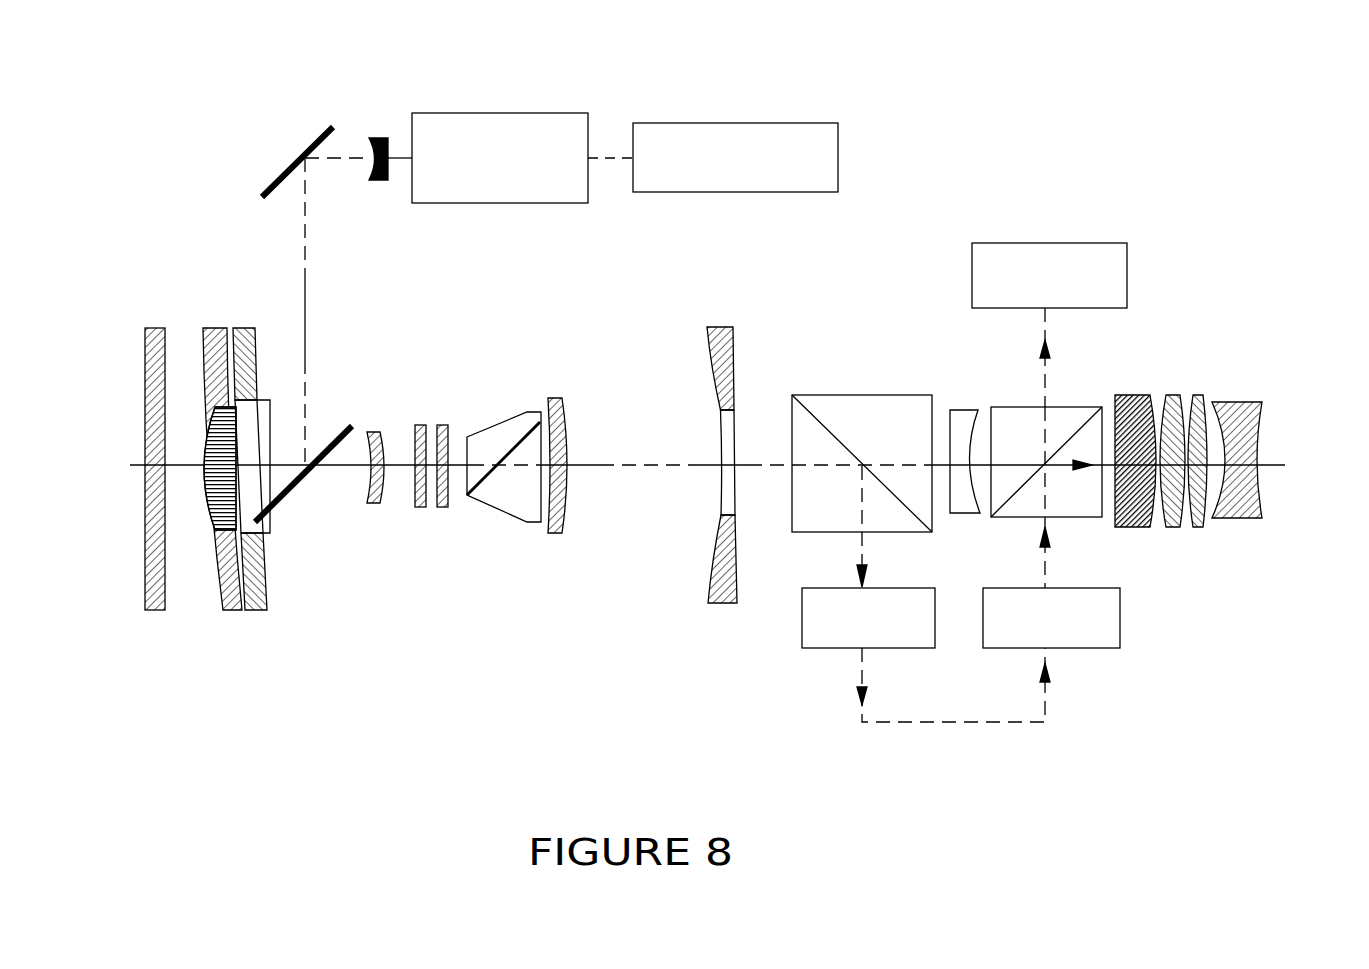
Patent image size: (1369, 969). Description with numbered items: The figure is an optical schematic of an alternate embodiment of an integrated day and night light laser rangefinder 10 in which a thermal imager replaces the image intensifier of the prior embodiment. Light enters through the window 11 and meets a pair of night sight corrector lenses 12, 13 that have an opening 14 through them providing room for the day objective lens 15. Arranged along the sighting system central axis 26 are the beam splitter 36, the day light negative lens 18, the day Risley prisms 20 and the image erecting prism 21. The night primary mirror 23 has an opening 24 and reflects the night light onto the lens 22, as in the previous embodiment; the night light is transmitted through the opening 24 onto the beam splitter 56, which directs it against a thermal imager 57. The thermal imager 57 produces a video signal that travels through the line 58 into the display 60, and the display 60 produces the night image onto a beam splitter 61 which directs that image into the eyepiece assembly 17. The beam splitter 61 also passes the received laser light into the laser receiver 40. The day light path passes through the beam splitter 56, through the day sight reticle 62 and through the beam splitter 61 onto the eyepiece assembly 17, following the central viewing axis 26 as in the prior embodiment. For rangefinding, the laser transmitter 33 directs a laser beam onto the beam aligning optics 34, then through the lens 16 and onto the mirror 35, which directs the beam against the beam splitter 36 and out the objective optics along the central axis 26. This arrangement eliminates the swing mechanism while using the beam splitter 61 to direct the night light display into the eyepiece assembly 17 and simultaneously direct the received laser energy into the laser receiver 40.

The integrated day and night light laser rangefinder 10 is at (152, 181).
The window 11 is at (145, 372).
The night sight corrector lens 12 is at (225, 610).
The night sight corrector lens 13 is at (270, 613).
The opening 14 is at (260, 433).
The day objective lens 15 is at (207, 410).
The lens 16 is at (380, 140).
The eyepiece assembly 17 is at (1212, 395).
The day light negative lens 18 is at (377, 430).
The day Risley prisms 20 is at (440, 508).
The image erecting prism 21 is at (502, 508).
The lens 22 is at (555, 535).
The night primary mirror 23 is at (733, 330).
The opening 24 is at (728, 447).
The central axis 26 is at (130, 465).
The laser transmitter 33 is at (728, 122).
The beam aligning optics 34 is at (525, 112).
The mirror 35 is at (290, 162).
The beam splitter 36 is at (352, 428).
The laser receiver 40 is at (1127, 248).
The beam splitter 56 is at (878, 395).
The thermal imager 57 is at (815, 650).
The line 58 is at (1017, 722).
The display 60 is at (1107, 648).
The beam splitter 61 is at (1087, 517).
The day sight reticle 62 is at (957, 410).